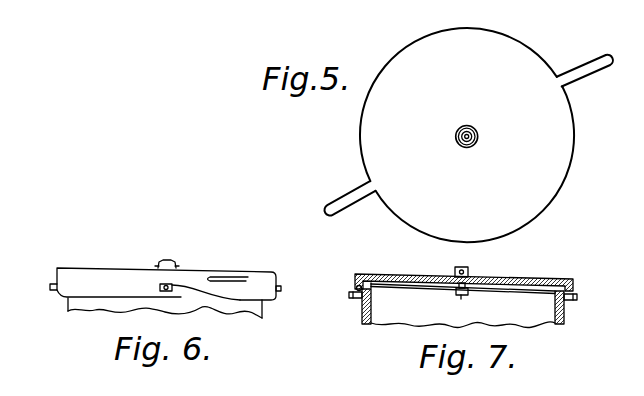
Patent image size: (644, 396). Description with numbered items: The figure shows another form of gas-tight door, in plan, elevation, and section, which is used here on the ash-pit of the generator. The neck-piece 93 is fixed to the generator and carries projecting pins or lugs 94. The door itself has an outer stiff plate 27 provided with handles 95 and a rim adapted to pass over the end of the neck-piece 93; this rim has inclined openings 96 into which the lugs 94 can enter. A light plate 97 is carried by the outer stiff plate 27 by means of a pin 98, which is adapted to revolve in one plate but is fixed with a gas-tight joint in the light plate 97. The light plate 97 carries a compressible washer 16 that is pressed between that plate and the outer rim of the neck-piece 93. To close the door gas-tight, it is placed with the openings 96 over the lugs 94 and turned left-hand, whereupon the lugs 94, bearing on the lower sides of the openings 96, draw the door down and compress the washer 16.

In FIG. 7, the compressible washer 16 is at (377, 288).
In FIG. 5, the outer stiff plate 27 is at (565, 152).
In FIG. 6, the outer stiff plate 27 is at (114, 275).
In FIG. 7, the outer stiff plate 27 is at (417, 278).
In FIG. 6, the neck-piece 93 is at (230, 310).
In FIG. 7, the neck-piece 93 is at (548, 322).
In FIG. 6, the projecting pins or lugs 94 is at (51, 286).
In FIG. 7, the projecting pins or lugs 94 is at (352, 297).
In FIG. 5, the handles 95 is at (590, 68).
In FIG. 6, the handles 95 is at (228, 277).
In FIG. 6, the inclined openings 96 is at (178, 283).
In FIG. 7, the inclined openings 96 is at (357, 289).
In FIG. 7, the light plate 97 is at (409, 290).
In FIG. 5, the pin 98 is at (479, 136).
In FIG. 6, the pin 98 is at (167, 259).
In FIG. 7, the pin 98 is at (463, 297).